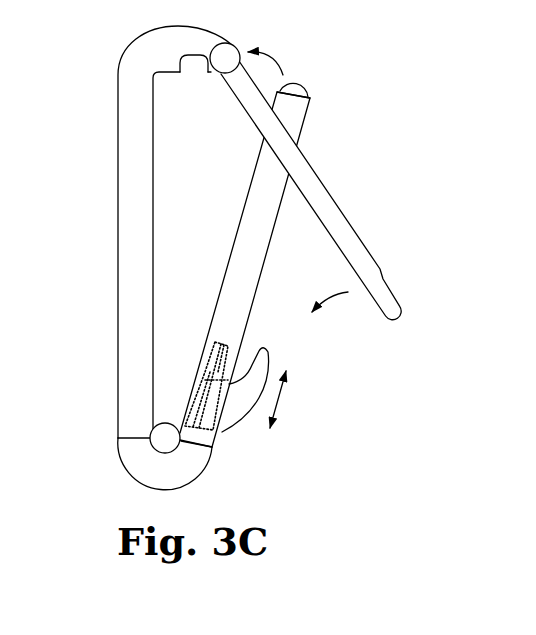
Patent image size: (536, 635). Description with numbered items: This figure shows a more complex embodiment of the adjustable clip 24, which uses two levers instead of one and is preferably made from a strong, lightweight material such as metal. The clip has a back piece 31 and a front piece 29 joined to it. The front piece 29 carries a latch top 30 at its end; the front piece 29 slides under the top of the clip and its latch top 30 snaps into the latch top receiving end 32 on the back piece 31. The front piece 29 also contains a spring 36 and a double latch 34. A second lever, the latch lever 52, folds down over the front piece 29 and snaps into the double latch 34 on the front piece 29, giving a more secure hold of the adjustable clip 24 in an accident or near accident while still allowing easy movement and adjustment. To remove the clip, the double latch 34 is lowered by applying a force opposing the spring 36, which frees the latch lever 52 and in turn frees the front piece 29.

The adjustable clip 24 is at (210, 258).
The front piece 29 is at (257, 285).
The latch top 30 is at (303, 83).
The back piece 31 is at (118, 348).
The latch top receiving end 32 is at (195, 57).
The double latch 34 is at (270, 357).
The spring 36 is at (213, 430).
The latch lever 52 is at (336, 200).